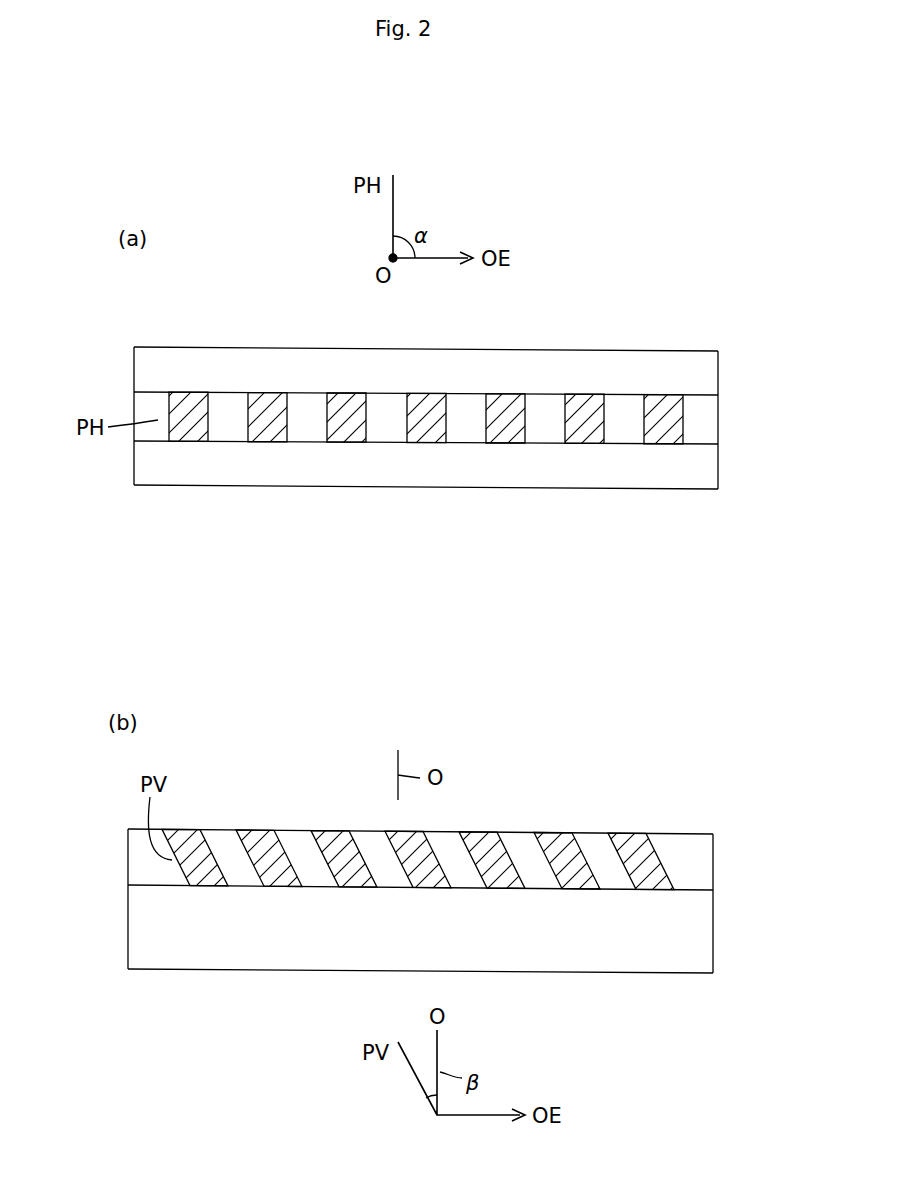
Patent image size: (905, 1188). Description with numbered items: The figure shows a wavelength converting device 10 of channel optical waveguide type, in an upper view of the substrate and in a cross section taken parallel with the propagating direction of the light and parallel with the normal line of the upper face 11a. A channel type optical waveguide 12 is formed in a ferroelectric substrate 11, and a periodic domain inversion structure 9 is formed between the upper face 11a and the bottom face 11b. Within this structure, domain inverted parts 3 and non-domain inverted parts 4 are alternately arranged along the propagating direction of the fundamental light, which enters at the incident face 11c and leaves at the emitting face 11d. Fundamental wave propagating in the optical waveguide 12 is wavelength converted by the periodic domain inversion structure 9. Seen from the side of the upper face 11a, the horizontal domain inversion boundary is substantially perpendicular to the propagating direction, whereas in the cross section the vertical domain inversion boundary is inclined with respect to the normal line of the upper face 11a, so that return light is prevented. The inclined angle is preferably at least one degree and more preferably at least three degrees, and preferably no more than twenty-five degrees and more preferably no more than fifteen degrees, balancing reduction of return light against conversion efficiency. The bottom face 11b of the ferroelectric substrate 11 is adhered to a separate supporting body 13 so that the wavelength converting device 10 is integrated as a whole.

The domain inverted part 3 is at (178, 403).
The non-domain inverted part 4 is at (620, 407).
The periodic domain inversion structure 9 is at (522, 369).
The wavelength converting device 10 is at (749, 361).
The ferroelectric substrate 11 is at (718, 339).
The upper face 11a is at (660, 367).
The bottom face 11b is at (622, 890).
The incident face 11c is at (134, 403).
The emitting face 11d is at (720, 422).
The channel type optical waveguide 12 is at (712, 407).
The supporting body 13 is at (697, 935).